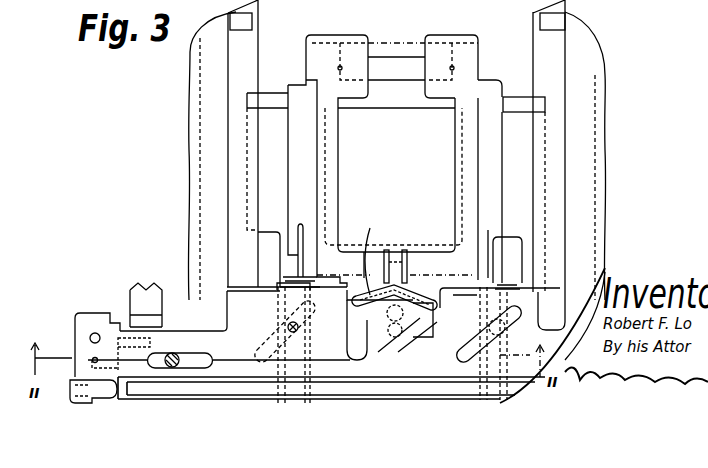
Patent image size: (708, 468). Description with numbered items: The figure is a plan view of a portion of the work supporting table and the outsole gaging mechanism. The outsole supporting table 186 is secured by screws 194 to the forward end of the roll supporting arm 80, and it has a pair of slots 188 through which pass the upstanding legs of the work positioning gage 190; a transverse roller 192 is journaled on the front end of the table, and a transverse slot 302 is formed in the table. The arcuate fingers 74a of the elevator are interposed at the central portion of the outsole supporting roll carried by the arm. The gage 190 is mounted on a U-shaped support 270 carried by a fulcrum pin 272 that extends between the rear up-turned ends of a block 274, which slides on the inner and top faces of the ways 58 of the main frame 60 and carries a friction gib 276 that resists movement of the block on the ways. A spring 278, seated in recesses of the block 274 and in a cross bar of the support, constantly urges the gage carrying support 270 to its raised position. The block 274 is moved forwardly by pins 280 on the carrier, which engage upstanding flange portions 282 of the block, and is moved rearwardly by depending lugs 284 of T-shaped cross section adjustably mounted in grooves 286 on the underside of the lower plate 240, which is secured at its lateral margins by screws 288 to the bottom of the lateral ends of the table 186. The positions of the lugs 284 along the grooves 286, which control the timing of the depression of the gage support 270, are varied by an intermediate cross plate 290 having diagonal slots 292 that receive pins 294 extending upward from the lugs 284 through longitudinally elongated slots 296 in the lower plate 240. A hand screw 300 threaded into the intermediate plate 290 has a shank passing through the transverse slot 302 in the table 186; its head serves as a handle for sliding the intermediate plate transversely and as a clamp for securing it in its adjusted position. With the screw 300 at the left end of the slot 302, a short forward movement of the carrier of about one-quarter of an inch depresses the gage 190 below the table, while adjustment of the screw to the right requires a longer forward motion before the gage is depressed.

The ways 58 is at (552, 58).
The main frame 60 is at (607, 200).
The arcuate fingers 74a is at (405, 250).
The roll supporting arm 80 is at (133, 295).
The outsole supporting table 186 is at (373, 373).
The slots 188 is at (357, 333).
The work positioning gage 190 is at (367, 253).
The transverse roller 192 is at (100, 400).
The screws 194 is at (115, 342).
The lower plate 240 is at (605, 272).
The U-shaped support 270 is at (453, 143).
The fulcrum pin 272 is at (370, 57).
The block 274 is at (492, 88).
The friction gib 276 is at (533, 43).
The spring 278 is at (367, 367).
The pins 280 is at (240, 30).
The upstanding flange portions 282 is at (247, 97).
The depending lugs 284 is at (520, 283).
The grooves 286 is at (498, 388).
The screws 288 is at (90, 336).
The intermediate cross plate 290 is at (530, 310).
The diagonal slots 292 is at (273, 327).
The pins 294 is at (277, 317).
The longitudinally elongated slots 296 is at (280, 385).
The hand screw 300 is at (174, 370).
The transverse slot 302 is at (197, 350).